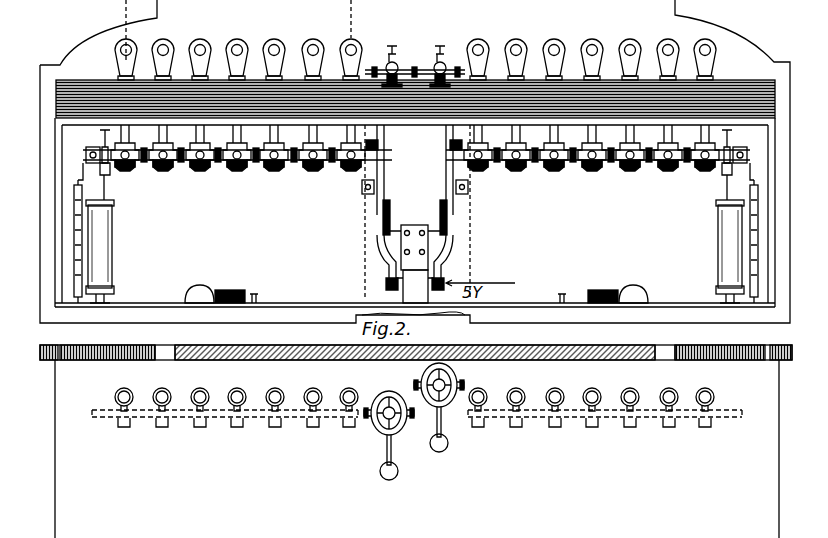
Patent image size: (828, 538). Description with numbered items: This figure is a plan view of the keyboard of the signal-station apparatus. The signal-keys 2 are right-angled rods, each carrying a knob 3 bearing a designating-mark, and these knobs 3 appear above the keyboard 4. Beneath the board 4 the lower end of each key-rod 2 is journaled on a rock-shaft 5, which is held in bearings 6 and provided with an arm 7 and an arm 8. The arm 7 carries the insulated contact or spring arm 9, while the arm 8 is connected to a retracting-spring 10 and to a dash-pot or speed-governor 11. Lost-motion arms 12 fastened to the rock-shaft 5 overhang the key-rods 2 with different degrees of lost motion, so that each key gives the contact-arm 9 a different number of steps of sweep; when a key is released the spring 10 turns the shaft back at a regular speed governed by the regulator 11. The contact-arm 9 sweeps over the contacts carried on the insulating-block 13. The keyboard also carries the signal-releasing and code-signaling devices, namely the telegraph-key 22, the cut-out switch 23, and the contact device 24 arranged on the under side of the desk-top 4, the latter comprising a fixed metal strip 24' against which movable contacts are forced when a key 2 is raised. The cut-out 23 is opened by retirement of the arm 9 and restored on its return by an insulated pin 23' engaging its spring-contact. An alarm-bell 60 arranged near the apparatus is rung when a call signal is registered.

The signal-key 2 is at (648, 168).
The knob 3 is at (237, 40).
The keyboard 4 is at (653, 488).
The rock-shaft 5 is at (224, 166).
The bearing 6 is at (462, 160).
The arm 7 is at (382, 202).
The arm 8 is at (110, 172).
The contact arm 9 is at (386, 258).
The retracting-spring 10 is at (82, 244).
The dash-pot 11 is at (100, 268).
The lost-motion arm 12 is at (578, 155).
The insulating-block 13 is at (389, 290).
The telegraph-key 22 is at (450, 70).
The cut-out switch 23 is at (414, 253).
The insulated pin 23' is at (435, 221).
The contact device 24 is at (605, 433).
The metal strip 24' is at (225, 433).
The alarm-bell 60 is at (238, 290).